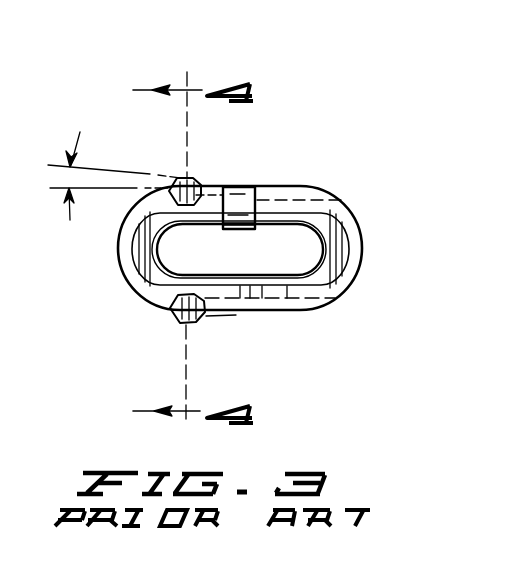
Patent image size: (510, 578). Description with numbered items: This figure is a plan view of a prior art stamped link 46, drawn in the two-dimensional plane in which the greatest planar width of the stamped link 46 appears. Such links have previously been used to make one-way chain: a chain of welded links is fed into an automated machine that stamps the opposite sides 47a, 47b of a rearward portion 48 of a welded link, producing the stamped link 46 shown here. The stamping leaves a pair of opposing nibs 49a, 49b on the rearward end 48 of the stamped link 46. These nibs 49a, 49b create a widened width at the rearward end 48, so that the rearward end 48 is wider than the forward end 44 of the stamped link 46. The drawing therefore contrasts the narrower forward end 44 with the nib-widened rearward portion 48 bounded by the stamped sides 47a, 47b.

The forward end 44 is at (363, 240).
The stamped link 46 is at (303, 192).
The rearward portion 48 is at (122, 280).
The opposite side 47a is at (210, 186).
The opposite side 47b is at (218, 320).
The nib 49a is at (182, 177).
The nib 49b is at (178, 323).